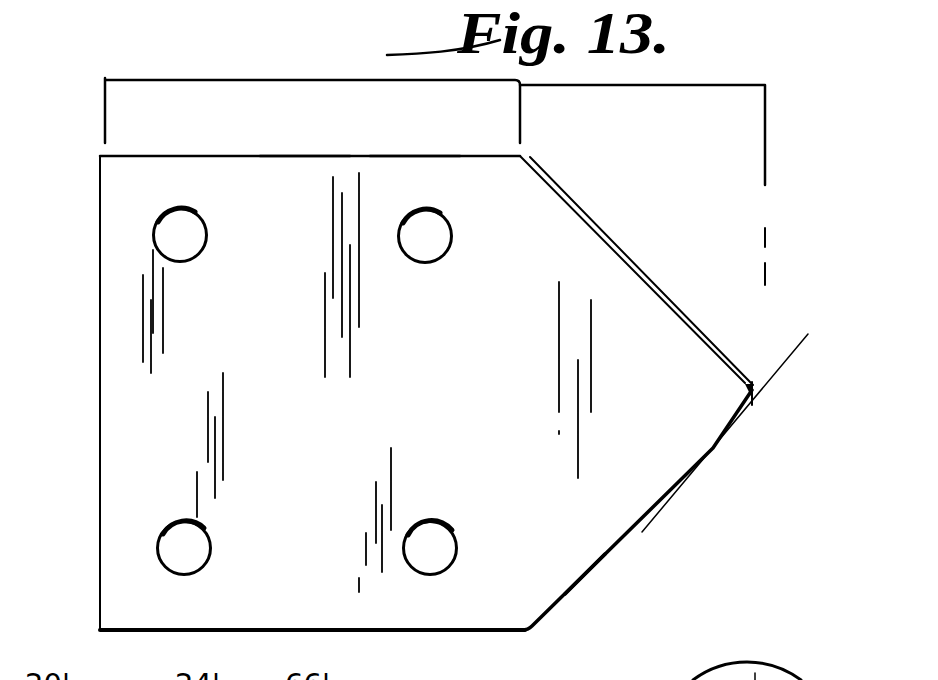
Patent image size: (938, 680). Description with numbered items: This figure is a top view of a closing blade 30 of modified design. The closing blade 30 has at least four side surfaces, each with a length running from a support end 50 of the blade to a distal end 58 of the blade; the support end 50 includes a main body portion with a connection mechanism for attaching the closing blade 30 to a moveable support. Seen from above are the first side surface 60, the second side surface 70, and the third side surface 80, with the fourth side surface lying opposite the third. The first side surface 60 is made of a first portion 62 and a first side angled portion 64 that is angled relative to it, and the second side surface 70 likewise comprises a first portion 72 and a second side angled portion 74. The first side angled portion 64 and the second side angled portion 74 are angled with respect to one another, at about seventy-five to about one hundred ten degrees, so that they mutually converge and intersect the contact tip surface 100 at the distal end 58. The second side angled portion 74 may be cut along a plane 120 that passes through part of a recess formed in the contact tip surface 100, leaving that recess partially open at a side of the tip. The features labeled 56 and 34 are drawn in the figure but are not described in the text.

The closing blade 30 is at (80, 214).
The support end 50 is at (298, 78).
The distal end 58 is at (740, 82).
The fastener holes 56 is at (170, 214).
The first side surface 60 is at (307, 155).
The first portion 62 is at (411, 155).
The first side angled portion 64 is at (642, 270).
The bend region 34 is at (722, 288).
The contact tip surface 100 is at (762, 382).
The plane 120 is at (663, 507).
The second side angled portion 74 is at (572, 590).
The third side surface 80 is at (137, 415).
The first portion 72 is at (200, 630).
The second side surface 70 is at (405, 630).